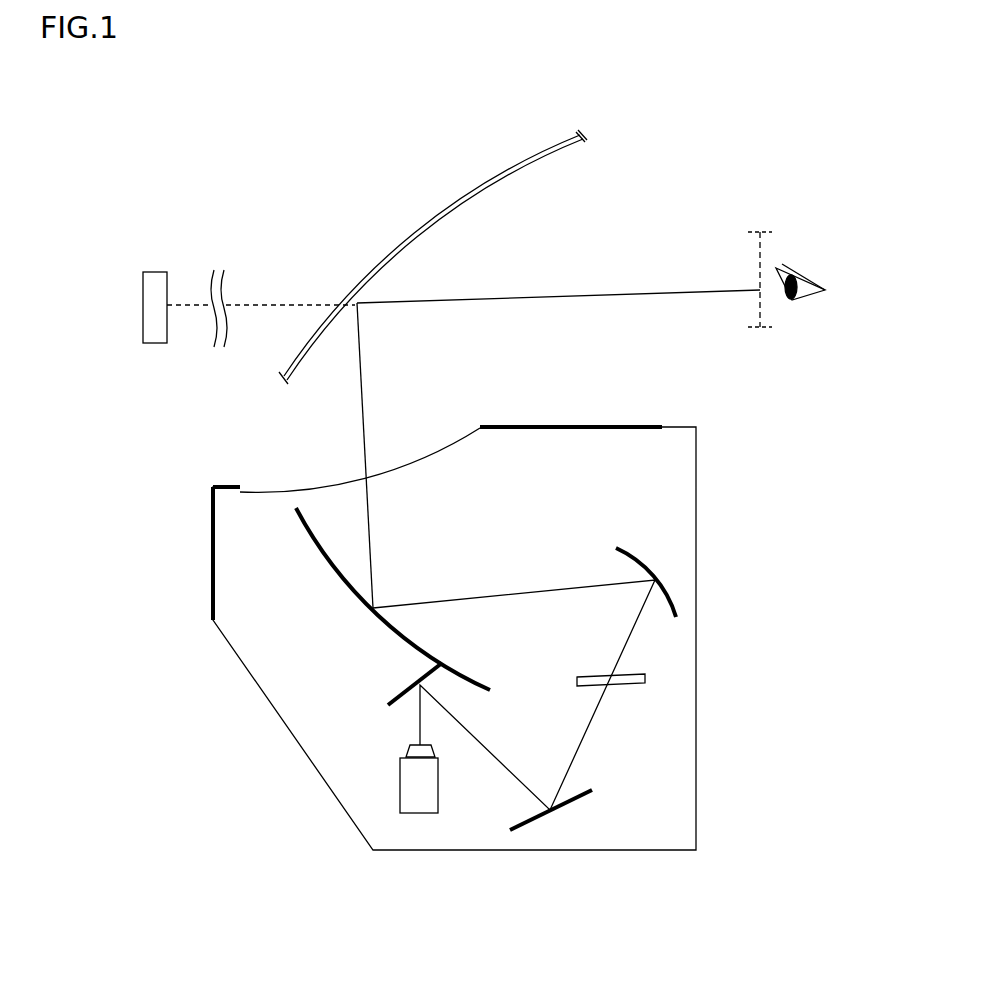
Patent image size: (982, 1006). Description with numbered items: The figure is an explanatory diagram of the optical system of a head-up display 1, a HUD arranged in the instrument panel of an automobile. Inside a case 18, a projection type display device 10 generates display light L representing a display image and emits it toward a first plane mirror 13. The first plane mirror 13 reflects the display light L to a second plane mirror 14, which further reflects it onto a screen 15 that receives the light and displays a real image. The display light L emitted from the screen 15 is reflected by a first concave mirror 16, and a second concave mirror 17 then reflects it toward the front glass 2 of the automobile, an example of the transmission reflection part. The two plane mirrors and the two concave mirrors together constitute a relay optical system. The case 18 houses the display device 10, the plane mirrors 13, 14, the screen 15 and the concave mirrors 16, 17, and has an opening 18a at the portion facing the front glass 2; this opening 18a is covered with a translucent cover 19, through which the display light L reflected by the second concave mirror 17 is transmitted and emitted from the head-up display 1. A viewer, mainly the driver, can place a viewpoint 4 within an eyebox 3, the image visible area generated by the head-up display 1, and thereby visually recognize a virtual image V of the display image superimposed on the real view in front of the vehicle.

The head-up display 1 is at (700, 578).
The front glass 2 is at (450, 208).
The eyebox 3 is at (760, 332).
The viewpoint 4 is at (806, 272).
The virtual image V is at (157, 345).
The display light L is at (360, 383).
The projection type display device 10 is at (400, 776).
The first plane mirror 13 is at (395, 692).
The second plane mirror 14 is at (582, 796).
The screen 15 is at (625, 686).
The first concave mirror 16 is at (640, 560).
The second concave mirror 17 is at (340, 580).
The case 18 is at (698, 497).
The opening 18a is at (482, 426).
The translucent cover 19 is at (262, 492).